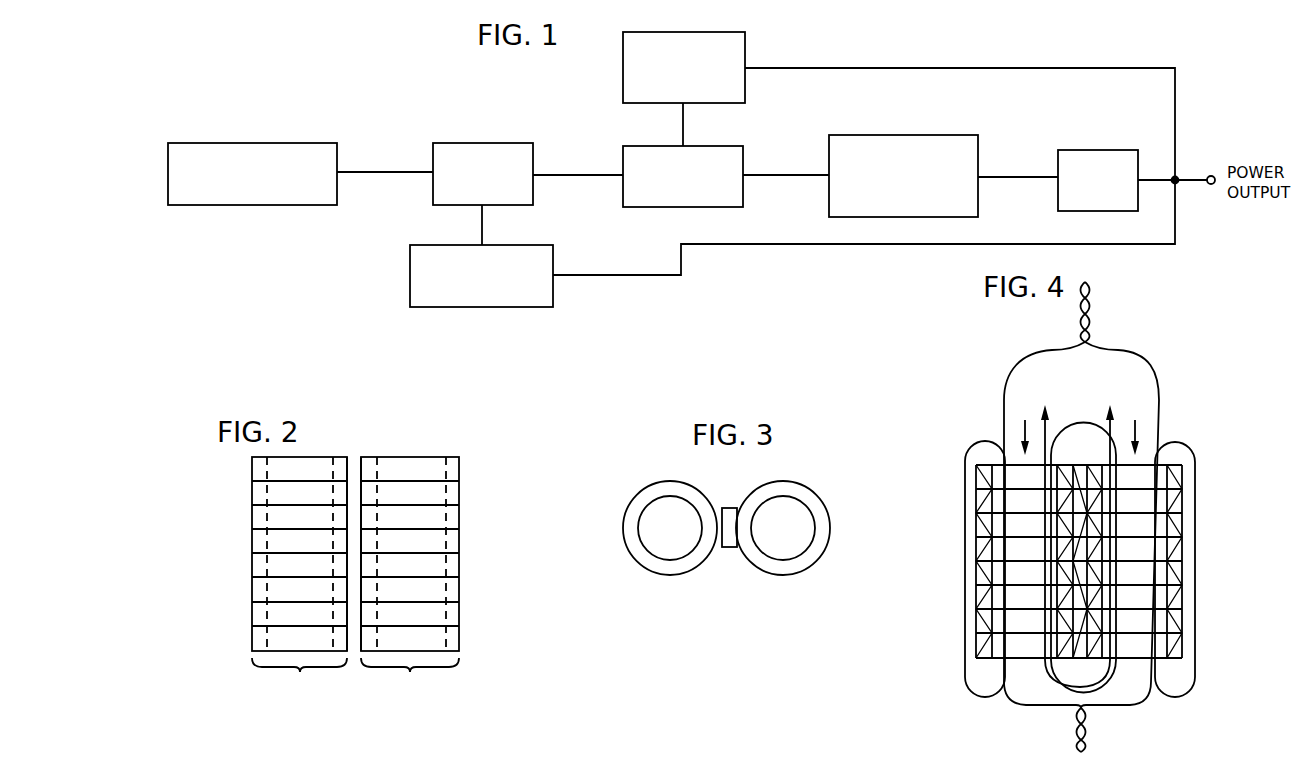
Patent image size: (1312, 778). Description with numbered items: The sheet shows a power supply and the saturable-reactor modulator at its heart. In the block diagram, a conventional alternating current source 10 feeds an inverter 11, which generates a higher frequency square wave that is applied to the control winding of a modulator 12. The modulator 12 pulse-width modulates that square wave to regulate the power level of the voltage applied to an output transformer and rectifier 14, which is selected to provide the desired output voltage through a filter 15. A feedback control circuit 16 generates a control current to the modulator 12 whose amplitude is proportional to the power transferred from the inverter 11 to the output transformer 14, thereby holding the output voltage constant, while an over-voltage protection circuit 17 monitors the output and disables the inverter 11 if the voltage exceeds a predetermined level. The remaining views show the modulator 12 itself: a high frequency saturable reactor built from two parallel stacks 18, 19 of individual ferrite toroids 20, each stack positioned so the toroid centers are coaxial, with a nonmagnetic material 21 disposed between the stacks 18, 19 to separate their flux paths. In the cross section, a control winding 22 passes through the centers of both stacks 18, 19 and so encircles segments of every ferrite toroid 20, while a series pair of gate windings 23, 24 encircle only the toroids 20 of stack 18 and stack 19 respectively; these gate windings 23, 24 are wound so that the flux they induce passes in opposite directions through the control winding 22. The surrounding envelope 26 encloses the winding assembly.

In FIG. 1, the alternating current source 10 is at (260, 143).
In FIG. 1, the inverter 11 is at (495, 143).
In FIG. 1, the modulator 12 is at (718, 146).
In FIG. 1, the output transformer and rectifier 14 is at (935, 135).
In FIG. 1, the filter 15 is at (1100, 150).
In FIG. 1, the feedback control circuit 16 is at (745, 52).
In FIG. 1, the over-voltage protection circuit 17 is at (530, 245).
In FIG. 2, the stack 18 is at (299, 575).
In FIG. 3, the stack 18 is at (636, 485).
In FIG. 4, the stack 18 is at (1012, 531).
In FIG. 2, the stack 19 is at (410, 575).
In FIG. 3, the stack 19 is at (810, 584).
In FIG. 4, the stack 19 is at (1144, 531).
In FIG. 2, the ferrite toroid 20 is at (253, 565).
In FIG. 3, the ferrite toroid 20 is at (776, 490).
In FIG. 4, the ferrite toroid 20 is at (1023, 655).
In FIG. 2, the nonmagnetic material 21 is at (352, 457).
In FIG. 3, the nonmagnetic material 21 is at (727, 550).
In FIG. 4, the nonmagnetic material 21 is at (1083, 470).
In FIG. 4, the control winding 22 is at (1078, 424).
In FIG. 4, the gate winding 23 is at (972, 446).
In FIG. 4, the gate winding 24 is at (1190, 450).
In FIG. 4, the envelope 26 is at (978, 414).